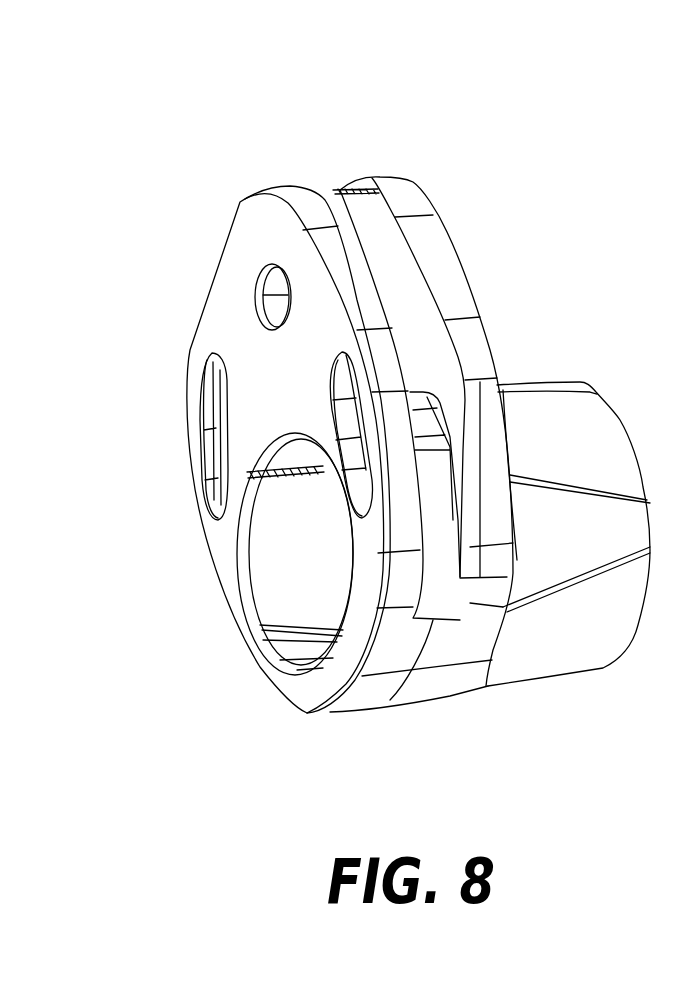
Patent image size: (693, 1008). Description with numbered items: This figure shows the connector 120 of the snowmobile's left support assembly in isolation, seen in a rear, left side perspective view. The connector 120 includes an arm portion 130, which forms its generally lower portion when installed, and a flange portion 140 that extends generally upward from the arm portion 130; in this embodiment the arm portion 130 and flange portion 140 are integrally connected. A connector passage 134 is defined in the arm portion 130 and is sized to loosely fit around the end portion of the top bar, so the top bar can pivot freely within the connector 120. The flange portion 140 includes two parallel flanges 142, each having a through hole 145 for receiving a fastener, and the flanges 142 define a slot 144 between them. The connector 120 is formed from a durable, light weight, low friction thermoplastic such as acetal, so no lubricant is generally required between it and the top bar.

The connector 120 is at (616, 234).
The arm portion 130 is at (552, 682).
The connector passage 134 is at (298, 558).
The flange portion 140 is at (183, 278).
The flanges 142 is at (268, 222).
The slot 144 is at (352, 190).
The through hole 145 is at (256, 310).